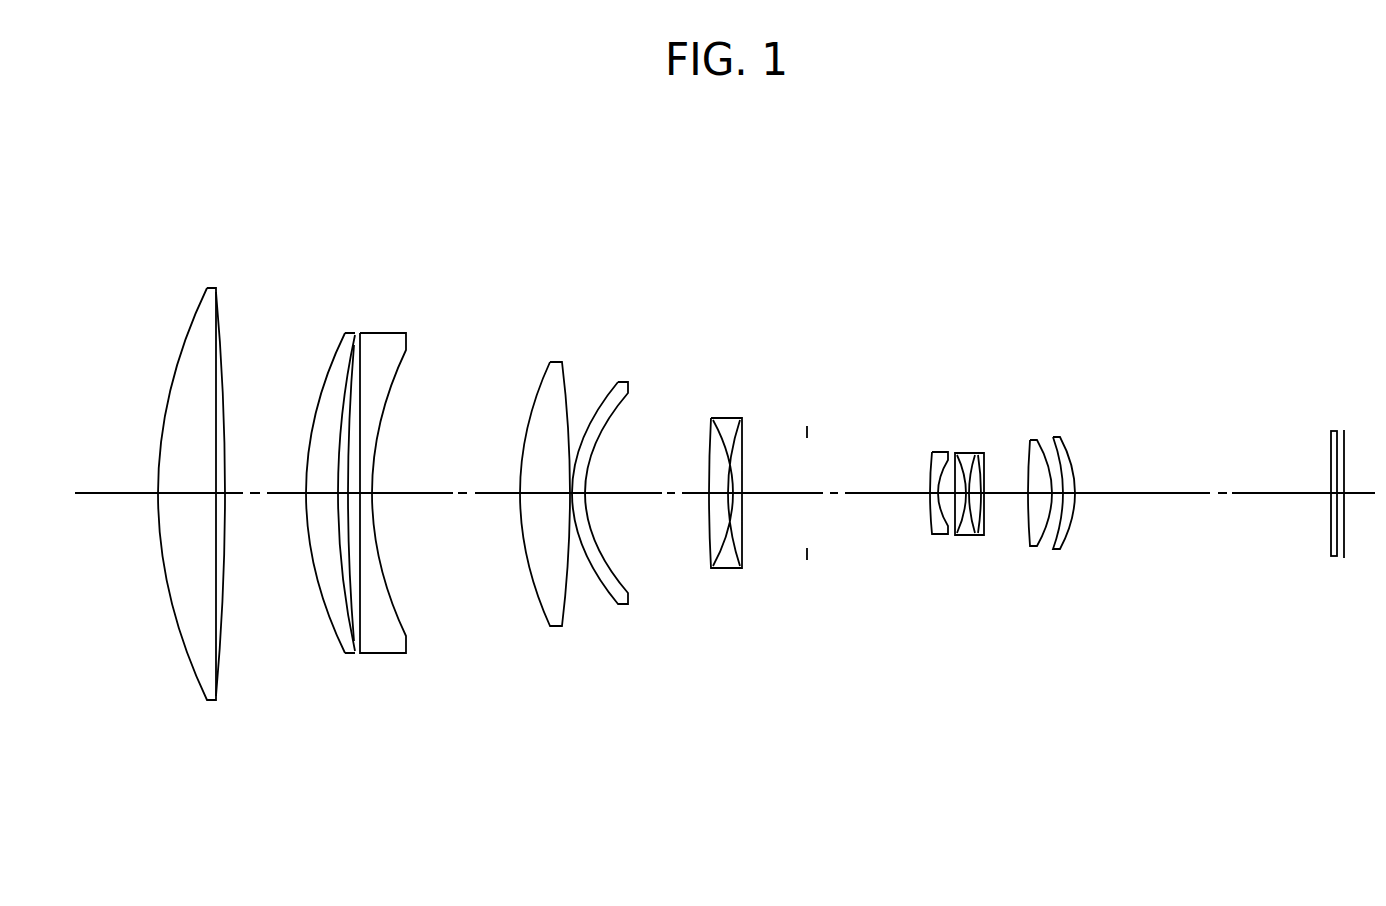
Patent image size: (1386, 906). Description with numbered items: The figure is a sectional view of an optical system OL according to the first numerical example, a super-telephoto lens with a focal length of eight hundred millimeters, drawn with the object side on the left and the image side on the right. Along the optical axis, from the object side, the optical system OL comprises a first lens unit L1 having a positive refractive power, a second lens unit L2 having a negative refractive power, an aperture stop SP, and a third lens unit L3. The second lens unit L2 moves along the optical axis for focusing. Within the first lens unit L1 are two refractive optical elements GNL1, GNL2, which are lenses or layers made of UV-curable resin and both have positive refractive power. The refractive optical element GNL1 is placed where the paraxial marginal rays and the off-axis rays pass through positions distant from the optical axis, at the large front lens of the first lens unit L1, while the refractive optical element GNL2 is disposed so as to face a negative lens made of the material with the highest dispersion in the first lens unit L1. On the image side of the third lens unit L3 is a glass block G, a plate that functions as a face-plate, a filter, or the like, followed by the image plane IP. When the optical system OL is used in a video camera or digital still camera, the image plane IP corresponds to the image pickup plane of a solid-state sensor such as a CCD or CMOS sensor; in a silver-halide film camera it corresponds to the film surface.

The optical system OL is at (129, 235).
The first lens unit L1 is at (660, 708).
The second lens unit L2 is at (767, 585).
The third lens unit L3 is at (1097, 585).
The refractive optical element GNL1 is at (219, 368).
The refractive optical element GNL2 is at (348, 403).
The aperture stop SP is at (810, 430).
The glass block G is at (1330, 437).
The image plane IP is at (1344, 430).